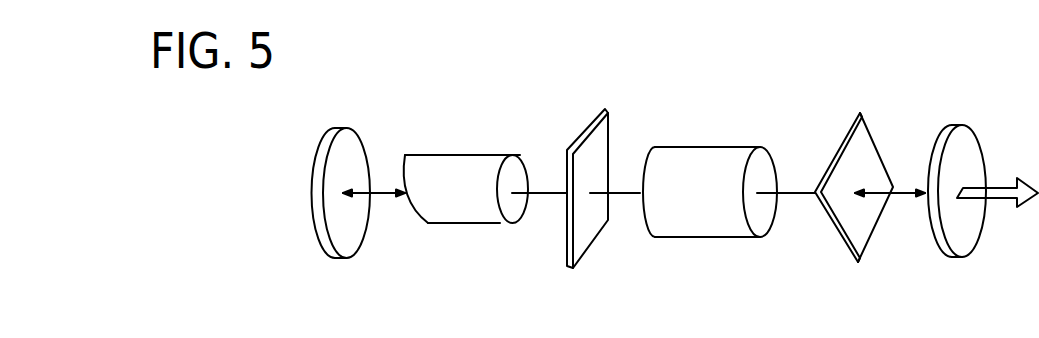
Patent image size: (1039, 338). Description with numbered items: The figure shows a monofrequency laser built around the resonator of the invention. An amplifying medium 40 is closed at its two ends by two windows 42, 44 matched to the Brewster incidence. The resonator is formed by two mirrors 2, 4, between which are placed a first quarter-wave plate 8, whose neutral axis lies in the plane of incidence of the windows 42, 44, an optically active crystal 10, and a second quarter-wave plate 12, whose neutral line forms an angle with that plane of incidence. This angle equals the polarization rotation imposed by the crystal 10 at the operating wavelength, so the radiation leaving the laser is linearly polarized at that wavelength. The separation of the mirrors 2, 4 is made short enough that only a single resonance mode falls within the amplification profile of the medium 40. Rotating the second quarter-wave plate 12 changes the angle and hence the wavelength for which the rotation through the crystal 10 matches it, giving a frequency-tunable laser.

The mirror 2 is at (342, 147).
The mirror 4 is at (965, 148).
The first quarter-wave plate 8 is at (598, 137).
The optically active crystal 10 is at (683, 205).
The second quarter-wave plate 12 is at (860, 147).
The amplifying medium 40 is at (453, 174).
The window 42 is at (413, 212).
The window 44 is at (512, 205).